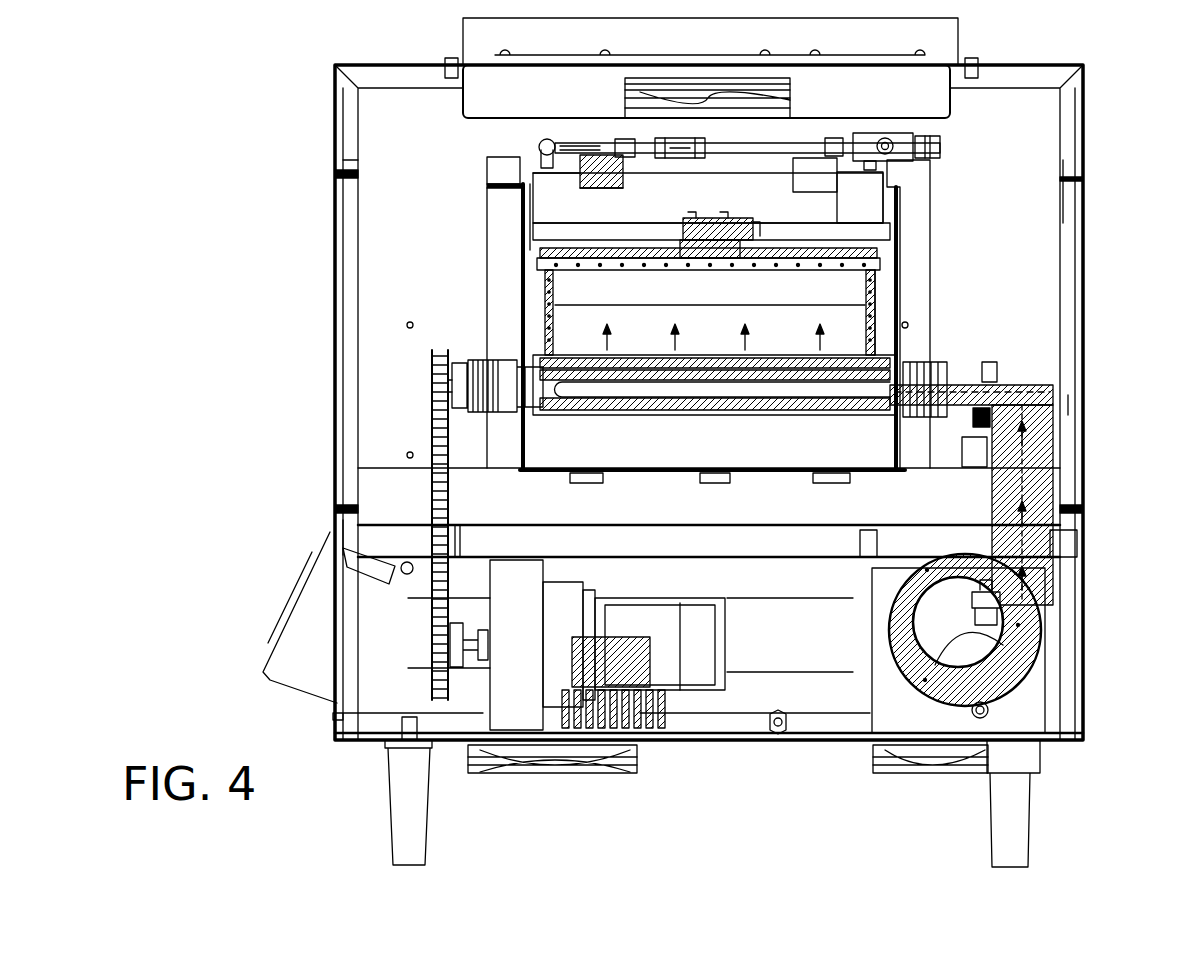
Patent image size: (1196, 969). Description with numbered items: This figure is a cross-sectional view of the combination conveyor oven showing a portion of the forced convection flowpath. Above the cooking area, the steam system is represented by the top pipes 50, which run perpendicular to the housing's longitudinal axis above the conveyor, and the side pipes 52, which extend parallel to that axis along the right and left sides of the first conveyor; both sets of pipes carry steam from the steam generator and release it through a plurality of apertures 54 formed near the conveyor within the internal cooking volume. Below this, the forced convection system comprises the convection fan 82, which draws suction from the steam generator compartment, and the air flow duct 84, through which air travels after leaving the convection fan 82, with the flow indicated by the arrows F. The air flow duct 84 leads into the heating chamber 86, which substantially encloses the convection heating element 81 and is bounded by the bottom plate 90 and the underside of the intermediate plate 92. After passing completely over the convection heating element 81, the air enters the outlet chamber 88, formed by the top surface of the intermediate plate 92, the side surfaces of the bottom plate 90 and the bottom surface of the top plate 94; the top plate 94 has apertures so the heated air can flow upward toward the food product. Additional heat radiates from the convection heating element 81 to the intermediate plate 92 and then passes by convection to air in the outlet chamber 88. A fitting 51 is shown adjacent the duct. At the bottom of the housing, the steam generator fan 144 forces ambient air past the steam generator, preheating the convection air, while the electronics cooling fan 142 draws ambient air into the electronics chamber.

The top pipes 50 is at (550, 258).
The duct fitting 51 is at (877, 343).
The side pipes 52 is at (545, 277).
The apertures 54 is at (575, 265).
The convection heating element 81 is at (603, 390).
The convection fan 82 is at (962, 690).
The air flow duct 84 is at (1050, 385).
The heating chamber 86 is at (753, 418).
The outlet chamber 88 is at (703, 345).
The bottom plate 90 is at (630, 418).
The intermediate plate 92 is at (607, 350).
The top plate 94 is at (873, 343).
The electronics cooling fan 142 is at (610, 770).
The steam generator fan 144 is at (890, 762).
The air flow F is at (1023, 507).